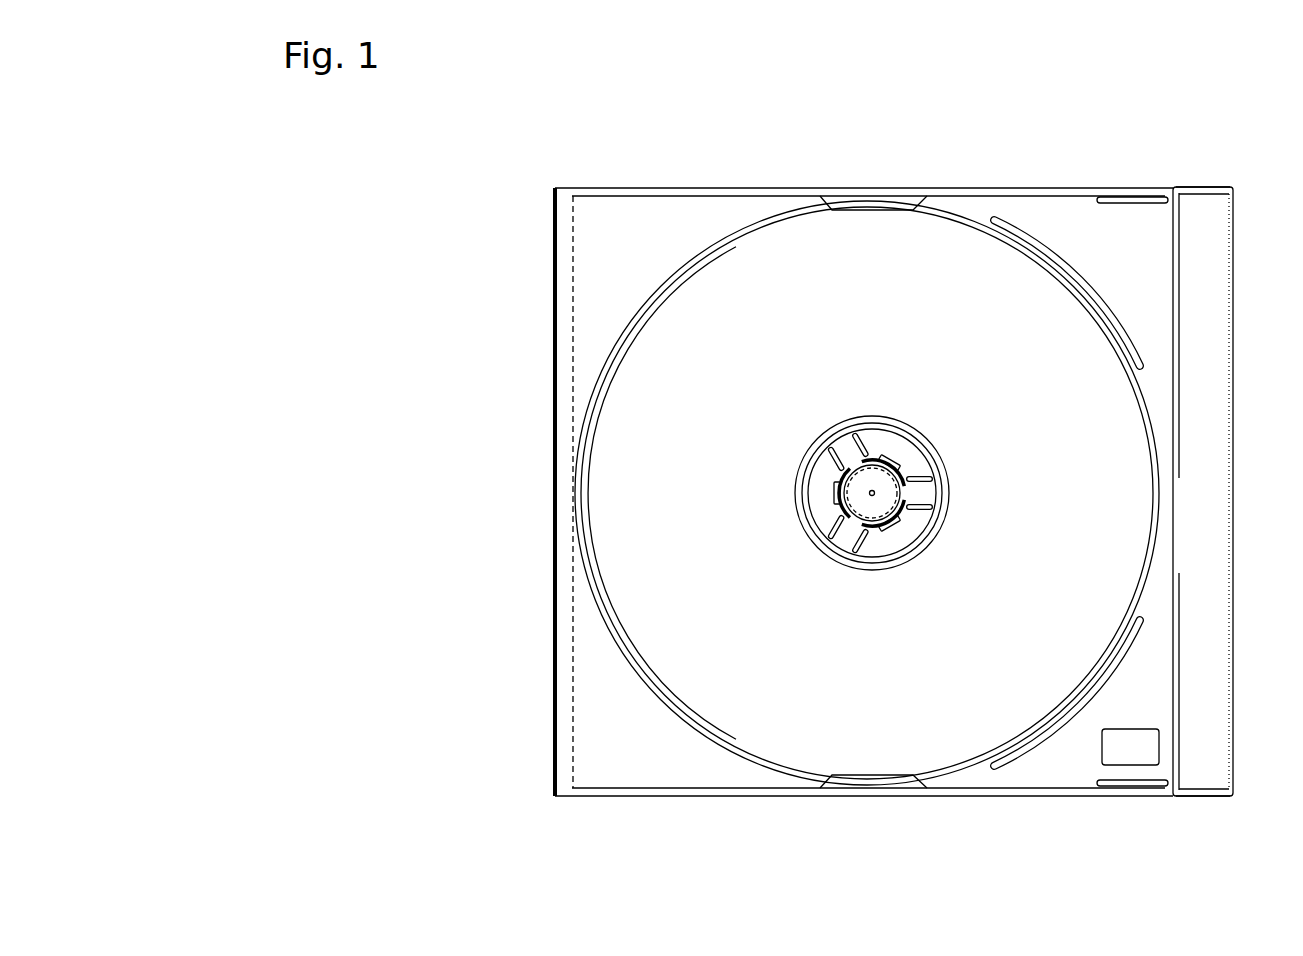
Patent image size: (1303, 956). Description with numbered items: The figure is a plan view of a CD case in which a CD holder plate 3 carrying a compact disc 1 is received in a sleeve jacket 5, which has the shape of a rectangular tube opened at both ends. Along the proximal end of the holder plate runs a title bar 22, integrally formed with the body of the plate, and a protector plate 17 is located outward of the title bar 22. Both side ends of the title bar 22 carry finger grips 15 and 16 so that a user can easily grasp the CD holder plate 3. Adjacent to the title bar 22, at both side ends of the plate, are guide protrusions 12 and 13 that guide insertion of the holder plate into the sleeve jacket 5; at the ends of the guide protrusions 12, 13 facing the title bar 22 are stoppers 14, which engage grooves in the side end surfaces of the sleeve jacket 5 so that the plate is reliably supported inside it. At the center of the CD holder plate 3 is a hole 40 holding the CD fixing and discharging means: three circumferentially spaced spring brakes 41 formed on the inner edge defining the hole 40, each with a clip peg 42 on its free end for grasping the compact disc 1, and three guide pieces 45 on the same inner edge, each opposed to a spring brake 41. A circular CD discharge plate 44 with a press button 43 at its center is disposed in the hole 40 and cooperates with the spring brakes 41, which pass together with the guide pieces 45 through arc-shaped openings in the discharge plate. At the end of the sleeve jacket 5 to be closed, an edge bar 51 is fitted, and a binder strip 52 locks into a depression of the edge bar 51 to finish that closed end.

The compact disc 1 is at (625, 435).
The CD holder plate 3 is at (1162, 294).
The sleeve jacket 5 is at (590, 662).
The guide protrusion 12 is at (1010, 197).
The guide protrusion 13 is at (1033, 788).
The stopper 14 is at (1150, 188).
The finger grip 15 is at (1207, 187).
The finger grip 16 is at (1213, 796).
The protector plate 17 is at (1212, 403).
The title bar 22 is at (1178, 322).
The hole 40 is at (875, 495).
The spring brake 41 is at (836, 449).
The clip peg 42 is at (853, 450).
The press button 43 is at (888, 480).
The CD discharge plate 44 is at (923, 530).
The guide piece 45 is at (893, 462).
The edge bar 51 is at (563, 222).
The binder strip 52 is at (553, 257).